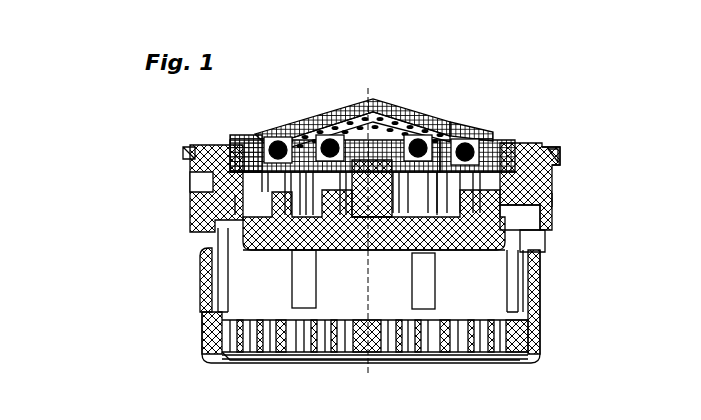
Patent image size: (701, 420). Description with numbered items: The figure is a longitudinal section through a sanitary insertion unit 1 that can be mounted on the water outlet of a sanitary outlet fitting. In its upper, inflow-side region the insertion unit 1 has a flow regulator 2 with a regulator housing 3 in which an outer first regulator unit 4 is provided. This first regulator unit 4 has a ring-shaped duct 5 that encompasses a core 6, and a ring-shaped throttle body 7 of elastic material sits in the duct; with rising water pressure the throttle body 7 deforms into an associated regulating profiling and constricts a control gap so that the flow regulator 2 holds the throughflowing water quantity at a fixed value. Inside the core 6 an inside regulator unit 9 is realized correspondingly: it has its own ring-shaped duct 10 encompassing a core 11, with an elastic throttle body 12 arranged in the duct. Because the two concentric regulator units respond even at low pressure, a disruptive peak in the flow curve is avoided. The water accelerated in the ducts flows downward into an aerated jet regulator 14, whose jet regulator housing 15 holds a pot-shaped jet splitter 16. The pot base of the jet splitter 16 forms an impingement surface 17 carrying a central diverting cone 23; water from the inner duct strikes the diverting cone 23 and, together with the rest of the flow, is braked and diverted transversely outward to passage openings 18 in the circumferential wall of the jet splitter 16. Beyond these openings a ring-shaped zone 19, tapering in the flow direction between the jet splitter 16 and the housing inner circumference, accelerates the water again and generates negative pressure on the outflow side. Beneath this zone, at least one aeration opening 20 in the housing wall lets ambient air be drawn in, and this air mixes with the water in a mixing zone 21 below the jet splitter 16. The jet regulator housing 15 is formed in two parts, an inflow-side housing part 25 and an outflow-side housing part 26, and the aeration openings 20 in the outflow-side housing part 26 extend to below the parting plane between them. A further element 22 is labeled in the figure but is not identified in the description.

The sanitary insertion unit 1 is at (558, 99).
The flow regulator 2 is at (450, 124).
The regulator housing 3 is at (503, 162).
The first regulator unit 4 is at (278, 136).
The ring-shaped duct 5 is at (266, 150).
The core 6 is at (315, 146).
The throttle body 7 is at (240, 152).
The inside regulator unit 9 is at (338, 102).
The ring-shaped duct 10 is at (378, 154).
The core 11 is at (354, 132).
The throttle body 12 is at (339, 133).
The jet regulator 14 is at (500, 203).
The jet regulator housing 15 is at (560, 201).
The jet splitter 16 is at (469, 236).
The impingement surface 17 is at (302, 206).
The passage openings 18 is at (222, 210).
The ring-shaped zone 19 is at (236, 216).
The aeration opening 20 is at (547, 243).
The mixing zone 21 is at (387, 271).
The connection 22 is at (441, 208).
The diverting cone 23 is at (343, 197).
The inflow-side housing part 25 is at (549, 147).
The outflow-side housing part 26 is at (542, 330).